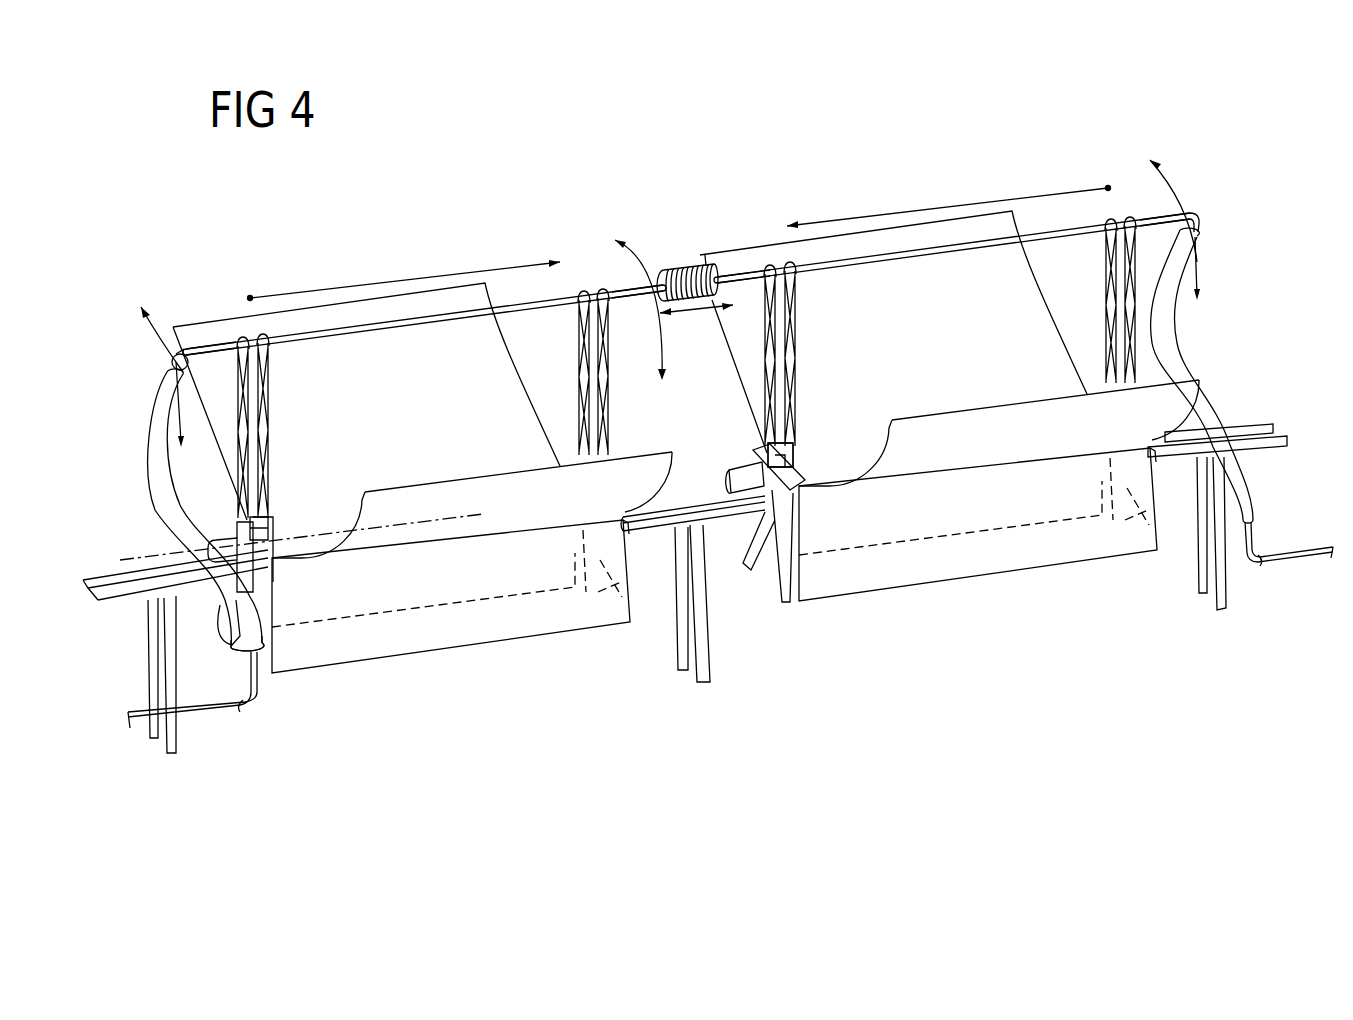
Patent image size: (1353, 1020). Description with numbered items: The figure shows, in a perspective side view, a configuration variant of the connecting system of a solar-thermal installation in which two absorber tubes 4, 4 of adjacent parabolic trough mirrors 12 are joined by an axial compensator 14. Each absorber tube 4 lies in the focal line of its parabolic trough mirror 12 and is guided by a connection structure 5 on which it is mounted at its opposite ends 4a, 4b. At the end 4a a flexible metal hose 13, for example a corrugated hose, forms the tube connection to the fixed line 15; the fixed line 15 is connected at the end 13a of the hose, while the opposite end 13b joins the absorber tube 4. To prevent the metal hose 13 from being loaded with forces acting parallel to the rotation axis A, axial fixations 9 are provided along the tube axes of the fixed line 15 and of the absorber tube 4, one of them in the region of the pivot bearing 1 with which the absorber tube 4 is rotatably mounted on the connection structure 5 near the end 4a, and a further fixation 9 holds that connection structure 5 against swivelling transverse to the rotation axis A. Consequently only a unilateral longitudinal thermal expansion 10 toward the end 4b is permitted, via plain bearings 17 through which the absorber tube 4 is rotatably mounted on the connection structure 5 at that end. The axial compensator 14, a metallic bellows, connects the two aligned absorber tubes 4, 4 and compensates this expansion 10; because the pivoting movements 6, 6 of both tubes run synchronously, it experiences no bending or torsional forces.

The pivot bearing 1 is at (797, 448).
The absorber tube 4 is at (410, 322).
The end of the absorber tube 4a is at (218, 347).
The end of the absorber tube 4b is at (620, 295).
The connection structure 5 is at (270, 437).
The pivoting movement 6 is at (176, 352).
The axial fixation 9 is at (262, 350).
The unilateral longitudinal thermal expansion 10 is at (679, 232).
The parabolic trough mirror 12 is at (429, 439).
The flexible metal hose 13 is at (148, 478).
The end of the metal hose 13a is at (255, 673).
The end of the metal hose 13b is at (187, 349).
The axial compensator 14 is at (688, 263).
The fixed line 15 is at (210, 710).
The plain bearing 17 is at (575, 310).
The rotation axis A is at (130, 556).